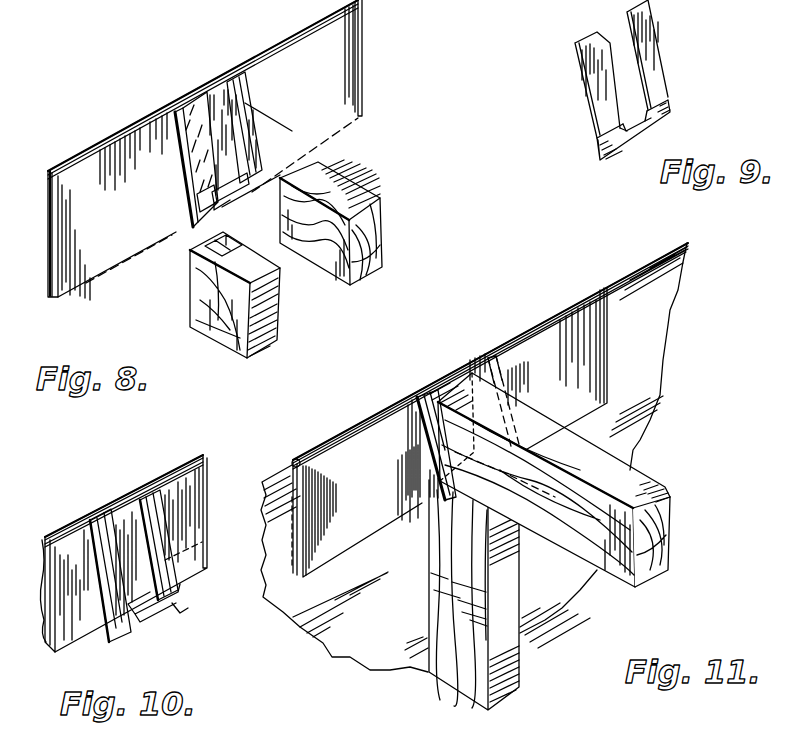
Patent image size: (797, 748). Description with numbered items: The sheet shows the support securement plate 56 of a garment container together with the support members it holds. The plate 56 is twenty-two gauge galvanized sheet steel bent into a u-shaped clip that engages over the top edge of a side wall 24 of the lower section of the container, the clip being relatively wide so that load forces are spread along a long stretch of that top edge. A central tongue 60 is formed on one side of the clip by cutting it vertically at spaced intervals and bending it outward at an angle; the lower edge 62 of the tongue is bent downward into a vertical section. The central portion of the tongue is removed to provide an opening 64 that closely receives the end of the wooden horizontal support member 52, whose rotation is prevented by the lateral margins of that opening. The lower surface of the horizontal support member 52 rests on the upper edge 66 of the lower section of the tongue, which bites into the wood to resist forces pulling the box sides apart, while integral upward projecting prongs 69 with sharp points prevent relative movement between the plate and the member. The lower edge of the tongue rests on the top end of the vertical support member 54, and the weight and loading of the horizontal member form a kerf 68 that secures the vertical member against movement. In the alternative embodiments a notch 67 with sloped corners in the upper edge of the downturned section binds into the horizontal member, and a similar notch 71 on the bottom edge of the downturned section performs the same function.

In FIG. 11, the side wall 24 is at (396, 636).
In FIG. 8, the horizontal support member 52 is at (360, 191).
In FIG. 11, the horizontal support member 52 is at (646, 490).
In FIG. 8, the vertical support member 54 is at (286, 317).
In FIG. 11, the vertical support member 54 is at (522, 676).
In FIG. 8, the securement plate 56 is at (75, 168).
In FIG. 10, the securement plate 56 is at (130, 498).
In FIG. 11, the securement plate 56 is at (352, 431).
In FIG. 8, the central tongue 60 is at (178, 108).
In FIG. 11, the central tongue 60 is at (464, 428).
In FIG. 8, the lower edge of the tongue 62 is at (197, 234).
In FIG. 8, the opening 64 is at (218, 96).
In FIG. 8, the upper edge of the lower section of the tongue 66 is at (232, 188).
In FIG. 9, the notch 67 is at (633, 120).
In FIG. 8, the kerf 68 is at (216, 275).
In FIG. 8, the upward projecting prongs 69 is at (236, 166).
In FIG. 10, the notch 71 is at (150, 614).